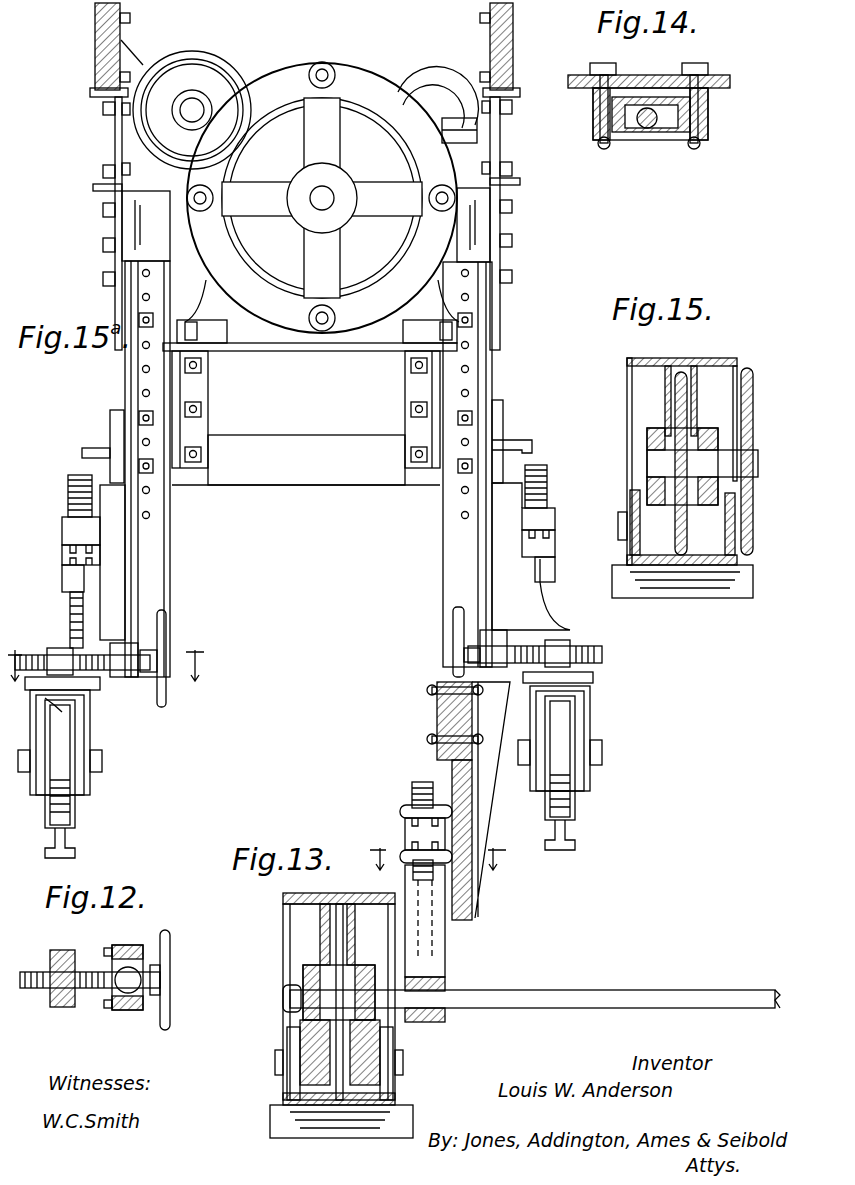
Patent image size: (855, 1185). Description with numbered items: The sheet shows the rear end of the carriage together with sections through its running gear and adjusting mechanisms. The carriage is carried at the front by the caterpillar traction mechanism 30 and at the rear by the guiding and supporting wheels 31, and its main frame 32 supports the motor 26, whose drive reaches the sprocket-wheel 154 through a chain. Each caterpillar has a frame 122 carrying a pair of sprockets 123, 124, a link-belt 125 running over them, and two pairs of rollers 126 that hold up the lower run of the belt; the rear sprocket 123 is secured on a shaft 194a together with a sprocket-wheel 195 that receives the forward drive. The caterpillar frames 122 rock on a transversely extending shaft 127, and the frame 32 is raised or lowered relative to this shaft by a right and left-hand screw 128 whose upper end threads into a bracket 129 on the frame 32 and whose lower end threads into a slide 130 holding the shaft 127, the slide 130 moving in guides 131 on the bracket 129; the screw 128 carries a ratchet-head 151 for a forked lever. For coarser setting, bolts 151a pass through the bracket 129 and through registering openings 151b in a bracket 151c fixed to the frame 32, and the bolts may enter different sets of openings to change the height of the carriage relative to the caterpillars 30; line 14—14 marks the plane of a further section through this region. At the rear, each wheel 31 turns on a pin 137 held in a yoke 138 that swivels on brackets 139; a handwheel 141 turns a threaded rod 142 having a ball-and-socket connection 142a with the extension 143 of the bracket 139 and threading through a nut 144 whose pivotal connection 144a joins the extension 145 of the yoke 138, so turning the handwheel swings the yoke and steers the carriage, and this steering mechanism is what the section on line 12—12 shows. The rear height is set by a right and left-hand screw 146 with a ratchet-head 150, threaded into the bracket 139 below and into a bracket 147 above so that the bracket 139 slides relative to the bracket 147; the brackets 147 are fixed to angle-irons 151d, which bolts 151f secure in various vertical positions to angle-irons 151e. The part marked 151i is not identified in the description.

In FIG. 15A, the motor 26 is at (357, 88).
In FIG. 15A, the sprocket-wheel 154 is at (190, 75).
In FIG. 15A, the angle-irons 151e is at (140, 231).
In FIG. 15A, the angle-irons 151d is at (170, 555).
In FIG. 15A, the bolts 151f is at (140, 466).
In FIG. 15A, the right and left-hand screw 146 is at (68, 490).
In FIG. 15A, the bracket 147 is at (62, 540).
In FIG. 15A, the ratchet-head 150 is at (62, 575).
In FIG. 15A, the extension 143 is at (60, 655).
In FIG. 12, the extension 143 is at (135, 945).
In FIG. 15A, the bracket 139 is at (57, 652).
In FIG. 15A, the threaded rod 142 is at (122, 648).
In FIG. 12, the threaded rod 142 is at (112, 968).
In FIG. 15A, the section line 12— 12 is at (113, 656).
In FIG. 15A, the handwheel 141 is at (166, 690).
In FIG. 12, the handwheel 141 is at (170, 945).
In FIG. 15A, the extension 145 is at (92, 683).
In FIG. 15A, the pivotal connection 144a is at (60, 705).
In FIG. 12, the pivotal connection 144a is at (48, 1003).
In FIG. 15A, the pin 137 is at (103, 760).
In FIG. 15A, the yoke 138 is at (88, 765).
In FIG. 15A, the guiding and supporting wheels 31 is at (78, 803).
In FIG. 15A, the bracket plate 151i is at (515, 804).
In FIG. 13, the frame 32 is at (437, 712).
In FIG. 13, the registering openings 151b is at (475, 922).
In FIG. 14, the registering openings 151b is at (690, 80).
In FIG. 13, the bracket 151c is at (452, 800).
In FIG. 14, the bracket 151c is at (688, 62).
In FIG. 13, the right and left-hand screw 128 is at (412, 790).
In FIG. 13, the bracket 129 is at (405, 812).
In FIG. 13, the slide 130 is at (410, 842).
In FIG. 13, the ratchet-head 151 is at (345, 815).
In FIG. 13, the section line 14— 14 is at (437, 854).
In FIG. 13, the link-belt 125 is at (305, 893).
In FIG. 13, the sprocket 124 is at (322, 920).
In FIG. 13, the frame 122 is at (303, 980).
In FIG. 15, the frame 122 is at (648, 440).
In FIG. 13, the shaft 127 is at (608, 990).
In FIG. 13, the rollers 126 is at (398, 1055).
In FIG. 15, the rollers 126 is at (632, 560).
In FIG. 13, the caterpillar traction mechanism 30 is at (406, 1082).
In FIG. 14, the bolts 151a is at (710, 118).
In FIG. 14, the guides 131 is at (680, 135).
In FIG. 15, the sprocket 123 is at (678, 400).
In FIG. 15, the sprocket-wheels 195 is at (747, 375).
In FIG. 15, the shafts 194a is at (745, 497).
In FIG. 12, the nut 144 is at (57, 962).
In FIG. 12, the ball-and-socket connection 142a is at (120, 1010).